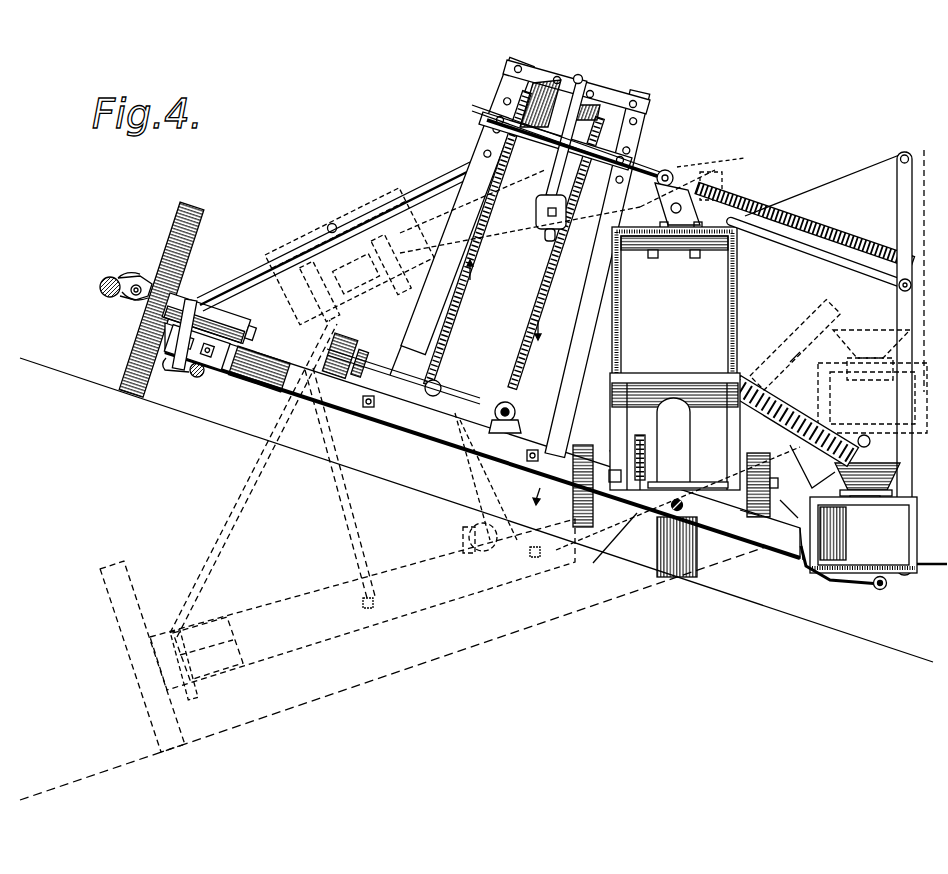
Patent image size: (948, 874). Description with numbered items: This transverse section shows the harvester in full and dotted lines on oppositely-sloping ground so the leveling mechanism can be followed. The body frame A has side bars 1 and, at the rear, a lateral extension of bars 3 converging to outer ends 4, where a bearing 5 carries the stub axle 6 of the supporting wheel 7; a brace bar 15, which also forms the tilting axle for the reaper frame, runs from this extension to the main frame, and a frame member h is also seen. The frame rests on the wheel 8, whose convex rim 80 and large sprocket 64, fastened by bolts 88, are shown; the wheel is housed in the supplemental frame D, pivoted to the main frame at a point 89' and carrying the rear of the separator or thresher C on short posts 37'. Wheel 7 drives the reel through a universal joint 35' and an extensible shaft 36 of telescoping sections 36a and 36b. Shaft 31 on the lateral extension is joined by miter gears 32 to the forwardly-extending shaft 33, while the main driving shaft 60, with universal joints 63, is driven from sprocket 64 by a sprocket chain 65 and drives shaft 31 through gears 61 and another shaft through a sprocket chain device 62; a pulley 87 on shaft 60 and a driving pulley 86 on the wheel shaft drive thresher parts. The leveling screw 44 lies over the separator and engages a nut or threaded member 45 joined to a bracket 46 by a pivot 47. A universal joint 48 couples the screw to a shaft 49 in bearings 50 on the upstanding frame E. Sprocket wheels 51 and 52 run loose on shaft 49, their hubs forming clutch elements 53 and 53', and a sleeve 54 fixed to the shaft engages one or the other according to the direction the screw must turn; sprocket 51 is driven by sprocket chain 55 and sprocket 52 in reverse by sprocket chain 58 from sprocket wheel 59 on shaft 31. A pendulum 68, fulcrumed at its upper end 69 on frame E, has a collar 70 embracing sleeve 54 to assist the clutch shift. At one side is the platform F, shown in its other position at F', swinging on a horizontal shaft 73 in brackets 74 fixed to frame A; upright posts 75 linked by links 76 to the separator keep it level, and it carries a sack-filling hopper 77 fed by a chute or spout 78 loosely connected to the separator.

The side bars 1 is at (665, 510).
The bars 3 is at (422, 436).
The outer ends 4 is at (222, 366).
The bearing 5 is at (236, 326).
The stub axle 6 is at (258, 340).
The supporting wheel 7 is at (180, 243).
The wheel 8 is at (678, 575).
The bar 15 is at (188, 376).
The shaft 31 is at (403, 376).
The miter gears 32 is at (462, 442).
The forwardly-extending shaft 33 is at (498, 436).
The pin 35' is at (140, 276).
The extensible shaft 36 is at (108, 288).
The section of extensible shaft 36a is at (118, 296).
The section of extensible shaft 36b is at (113, 277).
The short posts 37' is at (686, 411).
The screw 44 is at (762, 210).
The nut or threaded member 45 is at (708, 172).
The bracket 46 is at (658, 210).
The pivot 47 is at (675, 214).
The universal joint 48 is at (667, 170).
The shaft 49 is at (628, 168).
The bearings 50 is at (482, 115).
The sprocket wheel 51 is at (638, 108).
The sprocket wheel 52 is at (500, 95).
The clutch element 53 is at (555, 120).
The clutch element 53' is at (576, 80).
The sleeve 54 is at (575, 110).
The sprocket chain 55 is at (538, 330).
The sprocket chain 58 is at (478, 239).
The sprocket wheel 59 is at (440, 384).
The main driving shaft 60 is at (700, 486).
The gears 61 is at (340, 368).
The sprocket chain device 62 is at (372, 378).
The universal joints 63 is at (496, 405).
The large sprocket 64 is at (640, 436).
The sprocket chain 65 is at (646, 462).
The pendulum 68 is at (536, 213).
The upper end 69 is at (580, 76).
The collar 70 is at (560, 123).
The horizontal shaft 73 is at (889, 589).
The brackets 74 is at (836, 584).
The upright posts 75 is at (910, 216).
The links 76 is at (832, 188).
The sack-filling hopper 77 is at (880, 335).
The chute or spout 78 is at (770, 356).
The rim 80 is at (673, 442).
The driving pulley 86 is at (578, 452).
The pulley 87 is at (756, 460).
The bolts 88 is at (700, 445).
The bolt 89' is at (701, 515).
The body frame A is at (774, 560).
The separator or thresher C is at (674, 307).
The supplemental frame D is at (610, 547).
The upstanding frame E is at (290, 258).
The platform F is at (872, 381).
The lower box F' is at (863, 535).
The bar h is at (752, 528).